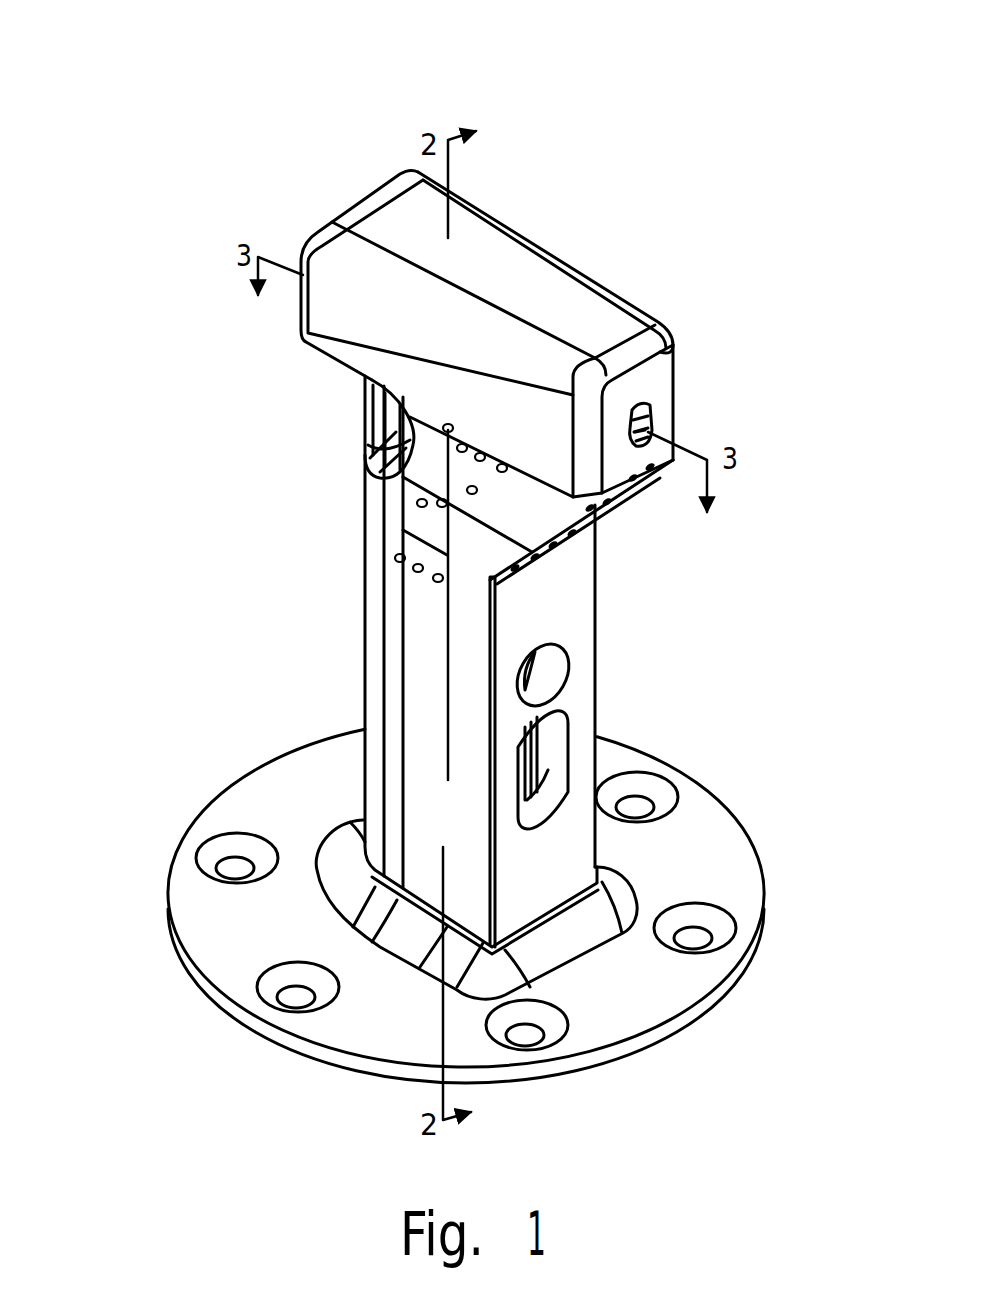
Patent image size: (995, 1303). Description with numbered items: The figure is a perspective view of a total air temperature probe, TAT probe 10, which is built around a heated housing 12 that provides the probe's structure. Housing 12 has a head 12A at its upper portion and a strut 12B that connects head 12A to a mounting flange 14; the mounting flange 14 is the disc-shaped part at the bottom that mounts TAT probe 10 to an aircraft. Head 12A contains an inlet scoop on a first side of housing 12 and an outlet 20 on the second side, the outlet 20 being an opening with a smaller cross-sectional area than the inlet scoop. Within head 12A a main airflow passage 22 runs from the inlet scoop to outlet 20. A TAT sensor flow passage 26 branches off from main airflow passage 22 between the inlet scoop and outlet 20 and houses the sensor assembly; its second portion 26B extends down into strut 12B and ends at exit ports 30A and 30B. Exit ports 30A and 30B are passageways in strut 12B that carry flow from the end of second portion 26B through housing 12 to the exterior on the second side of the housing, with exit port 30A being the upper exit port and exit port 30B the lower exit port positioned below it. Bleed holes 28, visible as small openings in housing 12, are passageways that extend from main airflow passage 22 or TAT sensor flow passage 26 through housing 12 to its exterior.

The total air temperature probe 10 is at (142, 92).
The housing 12 is at (226, 447).
The head 12A is at (553, 299).
The strut 12B is at (398, 659).
The mounting flange 14 is at (232, 918).
The outlet 20 is at (635, 445).
The main airflow passage 22 is at (655, 420).
The TAT sensor flow passage 26 is at (523, 747).
The second portion of TAT sensor flow passage 26B is at (523, 764).
The bleed holes 28 is at (420, 503).
The upper exit port 30A is at (553, 663).
The lower exit port 30B is at (551, 803).